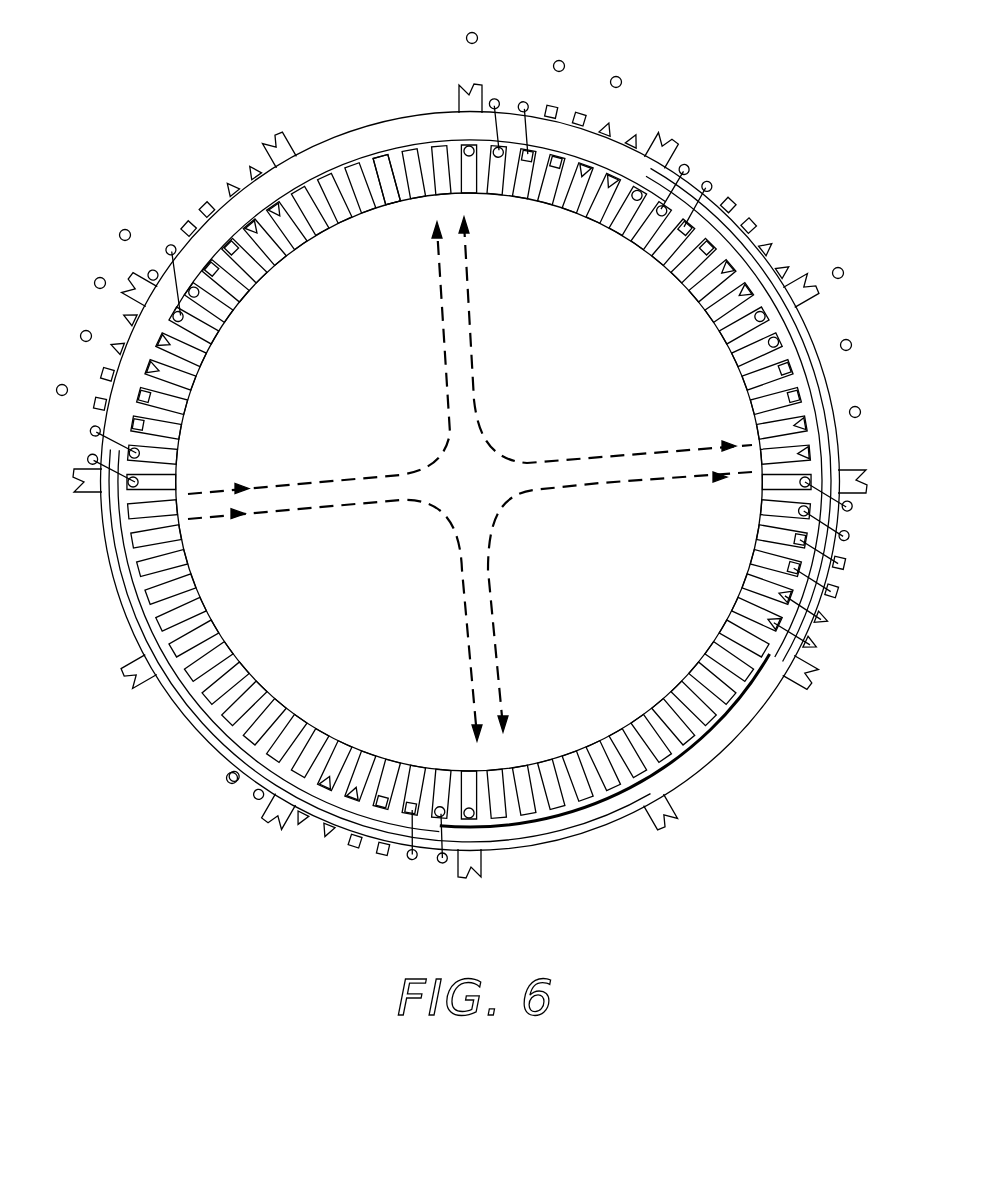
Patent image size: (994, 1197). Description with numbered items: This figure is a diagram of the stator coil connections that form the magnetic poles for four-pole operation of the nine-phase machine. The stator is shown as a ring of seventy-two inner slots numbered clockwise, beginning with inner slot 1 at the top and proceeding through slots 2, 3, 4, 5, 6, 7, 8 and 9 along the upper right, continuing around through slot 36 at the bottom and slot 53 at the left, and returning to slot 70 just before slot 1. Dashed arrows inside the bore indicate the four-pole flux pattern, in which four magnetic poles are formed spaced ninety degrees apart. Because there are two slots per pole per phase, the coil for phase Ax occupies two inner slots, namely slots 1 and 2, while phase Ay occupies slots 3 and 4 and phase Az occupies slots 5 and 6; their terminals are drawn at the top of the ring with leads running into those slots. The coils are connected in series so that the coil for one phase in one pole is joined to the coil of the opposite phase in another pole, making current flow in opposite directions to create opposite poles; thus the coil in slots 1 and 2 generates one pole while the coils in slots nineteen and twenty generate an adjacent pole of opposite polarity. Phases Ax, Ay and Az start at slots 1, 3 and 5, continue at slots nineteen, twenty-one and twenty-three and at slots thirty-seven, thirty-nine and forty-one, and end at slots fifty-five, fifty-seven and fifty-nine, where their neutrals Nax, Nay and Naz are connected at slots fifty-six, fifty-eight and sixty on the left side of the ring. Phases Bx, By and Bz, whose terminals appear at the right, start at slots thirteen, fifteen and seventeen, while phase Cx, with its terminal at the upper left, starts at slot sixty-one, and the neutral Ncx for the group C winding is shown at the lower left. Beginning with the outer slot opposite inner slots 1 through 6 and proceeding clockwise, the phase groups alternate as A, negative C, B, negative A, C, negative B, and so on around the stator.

The inner slot 1 is at (490, 226).
The inner slot 2 is at (515, 230).
The inner slot 3 is at (539, 236).
The inner slot 4 is at (563, 244).
The inner slot 5 is at (586, 253).
The inner slot 6 is at (607, 263).
The inner slot 7 is at (628, 274).
The inner slot 8 is at (647, 284).
The inner slot 9 is at (666, 296).
The inner slot 70 is at (426, 229).
The inner slot 53 is at (224, 554).
The inner slot 36 is at (538, 759).
The phase Ax is at (470, 151).
The phase Ay is at (528, 154).
The phase Az is at (584, 169).
The phase Bx is at (760, 315).
The phase By is at (786, 368).
The phase Bz is at (801, 424).
The phase Cx is at (153, 274).
The neutral of phase Ax Nax is at (135, 482).
The neutral of phase Ay Nay is at (140, 424).
The neutral of phase Az Naz is at (155, 368).
The neutral of phase Cx Ncx is at (229, 783).